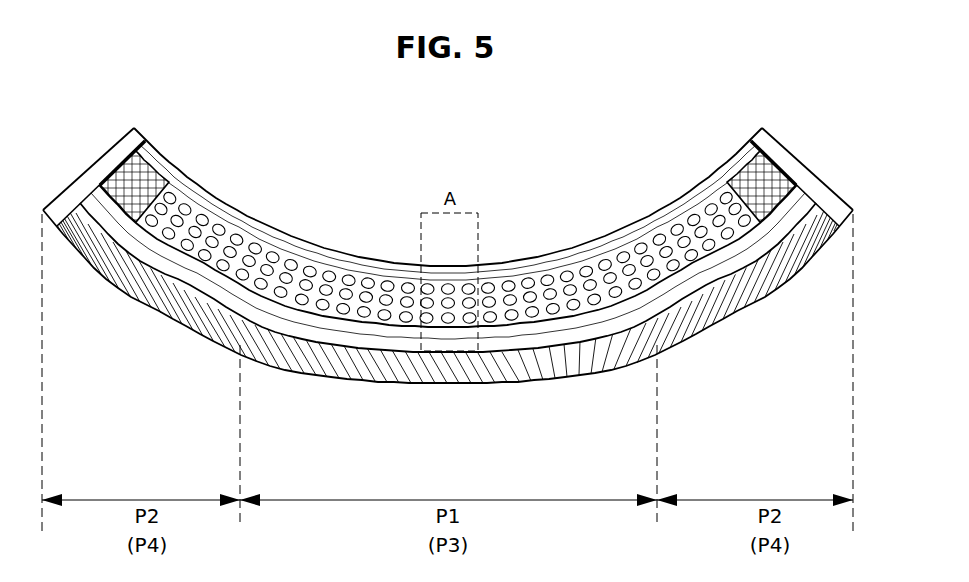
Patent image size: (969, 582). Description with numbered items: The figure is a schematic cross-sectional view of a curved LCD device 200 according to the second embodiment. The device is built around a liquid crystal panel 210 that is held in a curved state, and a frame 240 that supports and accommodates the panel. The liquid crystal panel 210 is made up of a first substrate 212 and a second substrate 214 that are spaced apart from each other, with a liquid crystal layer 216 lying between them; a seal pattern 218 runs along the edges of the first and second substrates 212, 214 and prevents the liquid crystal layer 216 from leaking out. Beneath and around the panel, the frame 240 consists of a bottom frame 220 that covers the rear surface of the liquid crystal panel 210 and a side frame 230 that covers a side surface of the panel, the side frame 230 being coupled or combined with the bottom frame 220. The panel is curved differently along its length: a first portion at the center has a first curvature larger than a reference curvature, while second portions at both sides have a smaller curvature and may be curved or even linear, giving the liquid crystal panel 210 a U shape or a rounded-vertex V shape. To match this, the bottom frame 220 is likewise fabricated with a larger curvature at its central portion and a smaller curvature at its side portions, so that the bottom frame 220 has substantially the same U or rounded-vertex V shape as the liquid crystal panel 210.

The curved LCD device 200 is at (432, 109).
The liquid crystal panel 210 is at (730, 120).
The first substrate 212 is at (637, 262).
The second substrate 214 is at (543, 270).
The liquid crystal layer 216 is at (604, 268).
The seal pattern 218 is at (748, 174).
The bottom frame 220 is at (708, 327).
The side frame 230 is at (851, 218).
The frame 240 is at (712, 412).